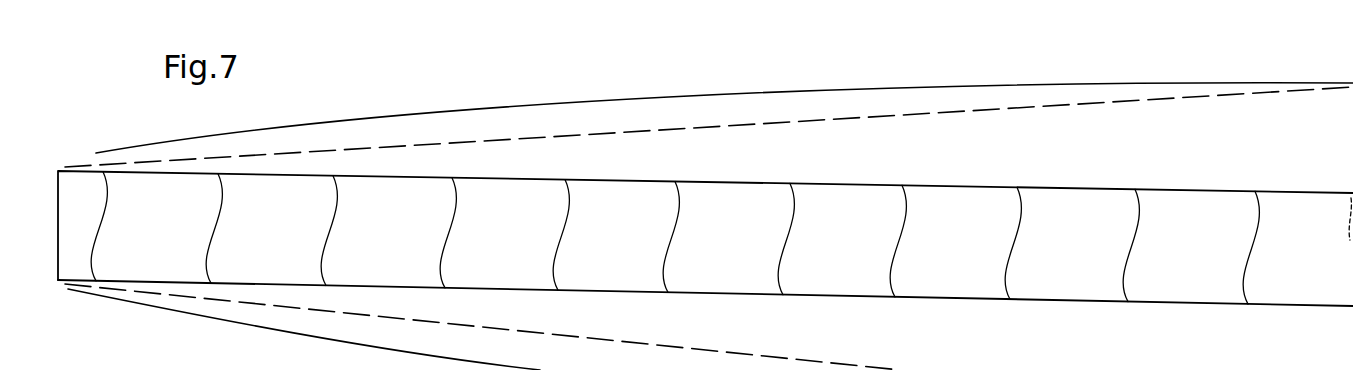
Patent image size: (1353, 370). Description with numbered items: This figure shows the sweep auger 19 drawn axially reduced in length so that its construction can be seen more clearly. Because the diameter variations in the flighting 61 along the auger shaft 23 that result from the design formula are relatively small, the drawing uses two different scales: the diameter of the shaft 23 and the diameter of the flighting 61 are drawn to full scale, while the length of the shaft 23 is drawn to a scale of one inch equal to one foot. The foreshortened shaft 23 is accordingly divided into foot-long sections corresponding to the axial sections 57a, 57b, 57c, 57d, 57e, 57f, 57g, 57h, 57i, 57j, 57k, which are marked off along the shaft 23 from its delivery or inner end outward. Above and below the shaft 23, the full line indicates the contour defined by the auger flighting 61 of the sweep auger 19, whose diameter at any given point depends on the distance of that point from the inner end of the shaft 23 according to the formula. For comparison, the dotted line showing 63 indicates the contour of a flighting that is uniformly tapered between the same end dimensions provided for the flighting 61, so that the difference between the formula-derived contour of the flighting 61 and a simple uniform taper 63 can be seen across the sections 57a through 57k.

The sweep auger 19 is at (481, 101).
The flighting 61 is at (708, 93).
The sweep auger shaft 23 is at (1205, 196).
The dotted line showing 63 is at (1043, 369).
The axial section 57a is at (127, 226).
The axial section 57b is at (246, 229).
The axial section 57c is at (366, 231).
The axial section 57d is at (482, 233).
The axial section 57e is at (593, 235).
The axial section 57f is at (707, 237).
The axial section 57g is at (822, 238).
The axial section 57h is at (935, 241).
The axial section 57i is at (1049, 243).
The axial section 57j is at (1166, 245).
The axial section 57k is at (1284, 247).